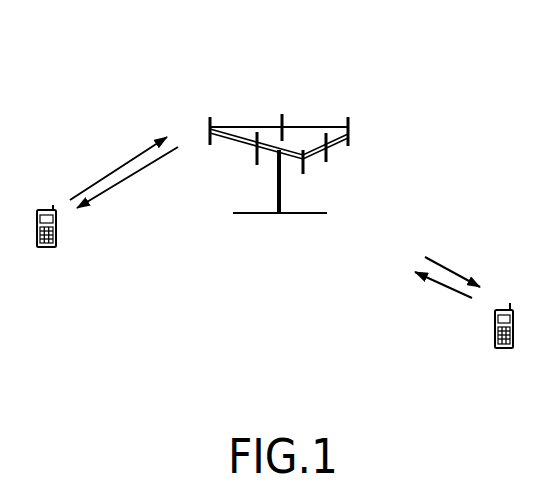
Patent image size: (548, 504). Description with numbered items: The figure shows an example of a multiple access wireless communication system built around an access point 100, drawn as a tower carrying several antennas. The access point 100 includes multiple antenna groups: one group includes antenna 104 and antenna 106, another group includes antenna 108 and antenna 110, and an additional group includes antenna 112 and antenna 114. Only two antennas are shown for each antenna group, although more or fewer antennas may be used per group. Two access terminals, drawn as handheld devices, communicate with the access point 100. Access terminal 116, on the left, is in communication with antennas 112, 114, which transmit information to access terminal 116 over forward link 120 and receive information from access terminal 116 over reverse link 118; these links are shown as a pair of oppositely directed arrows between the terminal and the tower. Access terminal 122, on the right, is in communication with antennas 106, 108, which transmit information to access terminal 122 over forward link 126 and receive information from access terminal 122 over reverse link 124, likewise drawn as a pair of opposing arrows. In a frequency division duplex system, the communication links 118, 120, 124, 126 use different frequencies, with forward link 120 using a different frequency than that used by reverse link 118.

The access point 100 is at (262, 213).
The antenna 104 is at (305, 172).
The antenna 106 is at (328, 162).
The antenna 108 is at (350, 143).
The antenna 110 is at (282, 117).
The antenna 112 is at (210, 123).
The antenna 114 is at (257, 165).
The access terminal 116 is at (53, 206).
The reverse link 118 is at (120, 163).
The forward link 120 is at (131, 178).
The access terminal 122 is at (510, 303).
The reverse link 124 is at (437, 284).
The forward link 126 is at (455, 272).